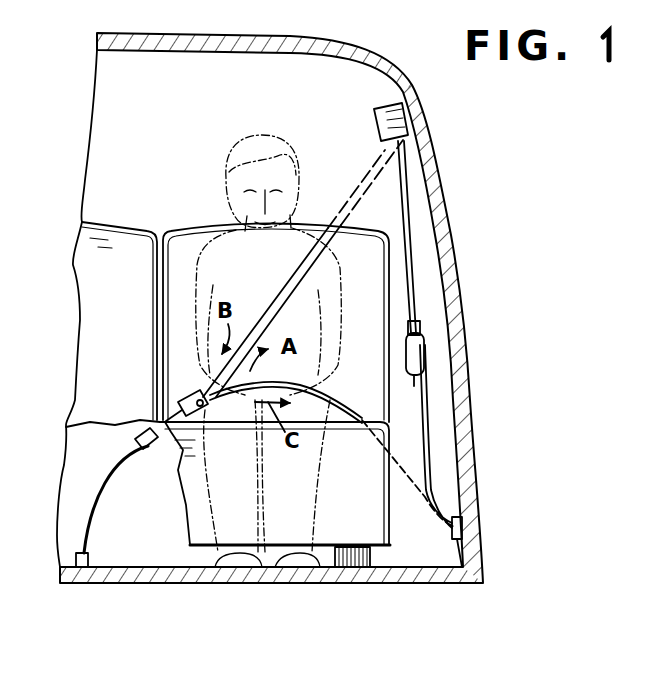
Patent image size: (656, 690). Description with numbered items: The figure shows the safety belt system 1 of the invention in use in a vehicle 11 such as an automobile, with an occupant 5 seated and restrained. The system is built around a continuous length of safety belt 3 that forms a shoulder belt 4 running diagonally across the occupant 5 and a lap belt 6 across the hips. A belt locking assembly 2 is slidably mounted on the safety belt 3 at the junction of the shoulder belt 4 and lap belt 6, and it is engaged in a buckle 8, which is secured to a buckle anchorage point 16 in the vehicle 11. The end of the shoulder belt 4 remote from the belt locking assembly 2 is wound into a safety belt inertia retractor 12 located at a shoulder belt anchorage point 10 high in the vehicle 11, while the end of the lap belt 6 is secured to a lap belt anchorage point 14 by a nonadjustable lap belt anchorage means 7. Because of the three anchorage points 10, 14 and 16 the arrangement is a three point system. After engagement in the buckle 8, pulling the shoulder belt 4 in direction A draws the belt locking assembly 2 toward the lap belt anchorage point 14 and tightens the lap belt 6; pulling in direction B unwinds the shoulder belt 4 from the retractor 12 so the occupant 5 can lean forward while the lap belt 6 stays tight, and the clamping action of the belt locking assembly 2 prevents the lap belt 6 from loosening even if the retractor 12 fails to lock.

The safety belt system 1 is at (242, 592).
The belt locking assembly 2 is at (406, 330).
The continuous length of safety belt 3 is at (435, 400).
The shoulder belt 4 is at (288, 285).
The occupant 5 is at (238, 248).
The lap belt 6 is at (427, 427).
The nonadjustable lap belt anchorage means 7 is at (455, 541).
The buckle 8 is at (143, 450).
The shoulder belt anchorage point 10 is at (409, 117).
The vehicle 11 is at (446, 233).
The safety belt inertia retractor 12 is at (373, 118).
The lap belt anchorage point 14 is at (462, 528).
The buckle anchorage point 16 is at (76, 558).